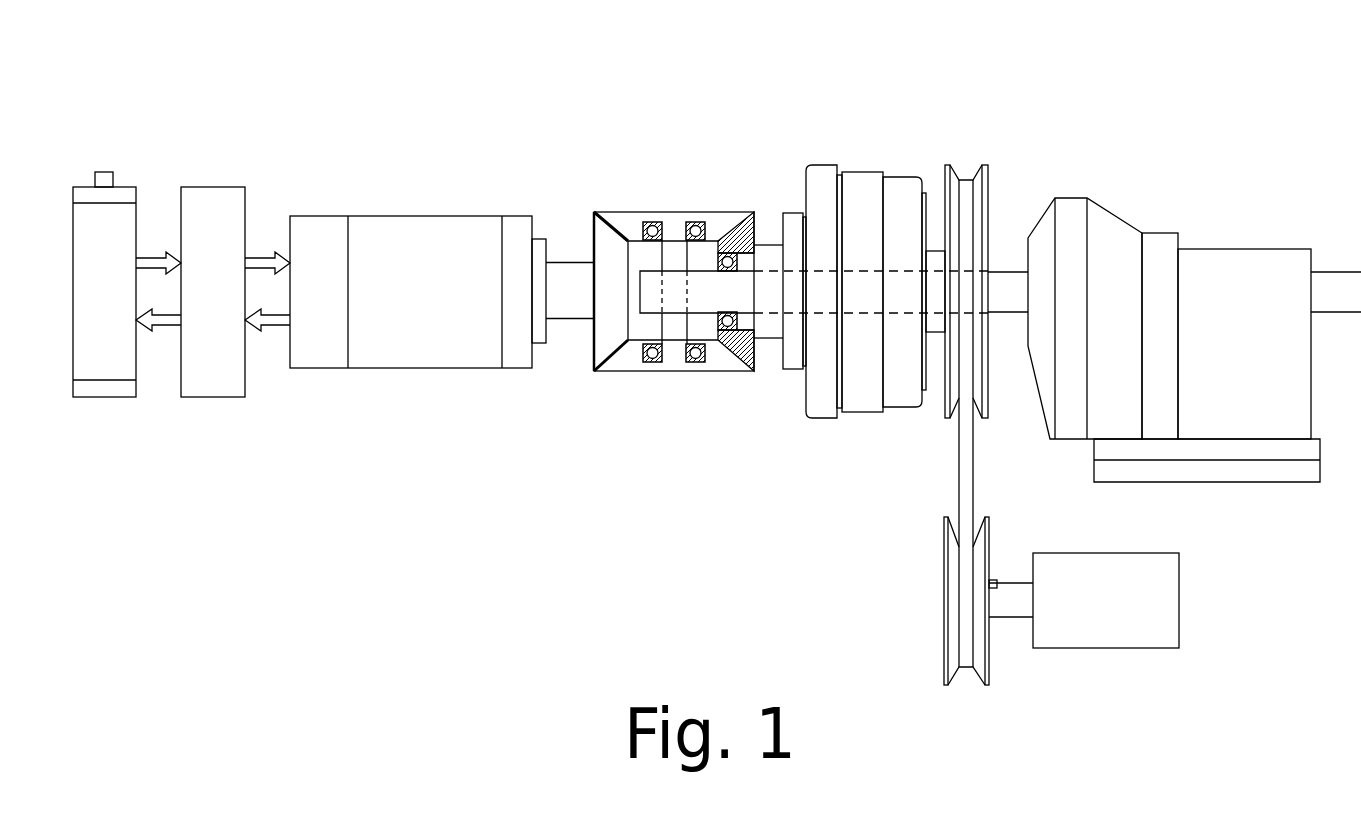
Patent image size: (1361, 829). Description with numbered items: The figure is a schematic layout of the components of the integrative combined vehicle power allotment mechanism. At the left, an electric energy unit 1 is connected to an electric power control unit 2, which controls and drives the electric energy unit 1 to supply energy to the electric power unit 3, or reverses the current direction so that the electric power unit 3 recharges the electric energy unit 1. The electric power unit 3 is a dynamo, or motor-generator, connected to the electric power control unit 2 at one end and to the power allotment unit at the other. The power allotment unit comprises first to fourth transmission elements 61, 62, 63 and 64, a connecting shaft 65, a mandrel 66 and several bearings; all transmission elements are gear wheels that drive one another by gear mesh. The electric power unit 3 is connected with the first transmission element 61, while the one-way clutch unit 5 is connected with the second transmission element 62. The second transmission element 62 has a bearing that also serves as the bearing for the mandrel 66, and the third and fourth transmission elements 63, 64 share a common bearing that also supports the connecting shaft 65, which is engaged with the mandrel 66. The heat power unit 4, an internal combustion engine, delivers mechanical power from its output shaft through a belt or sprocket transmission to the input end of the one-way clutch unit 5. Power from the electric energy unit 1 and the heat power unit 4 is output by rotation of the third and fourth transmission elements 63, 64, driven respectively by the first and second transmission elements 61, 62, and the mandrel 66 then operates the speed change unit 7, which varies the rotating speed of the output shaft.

The electric energy unit 1 is at (95, 213).
The electric power control unit 2 is at (205, 235).
The electric power unit 3 is at (392, 237).
The heat power unit 4 is at (1118, 623).
The one-way clutch unit 5 is at (866, 195).
The speed change unit 7 is at (1150, 271).
The first transmission element 61 is at (608, 247).
The second transmission element 62 is at (753, 347).
The third transmission element 63 is at (717, 223).
The fourth transmission element 64 is at (614, 364).
The connecting shaft 65 is at (655, 357).
The mandrel 66 is at (698, 298).